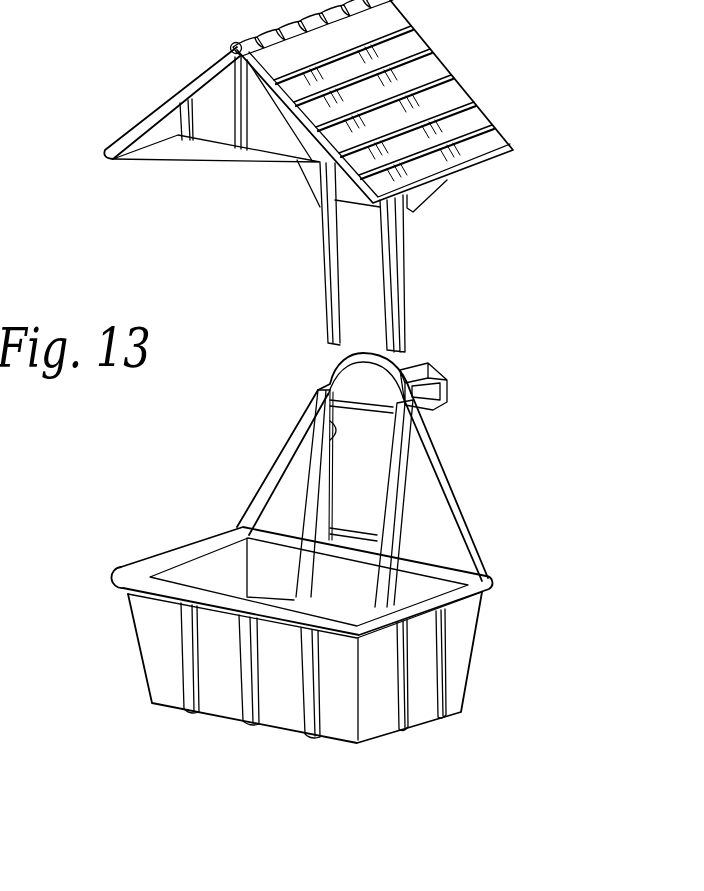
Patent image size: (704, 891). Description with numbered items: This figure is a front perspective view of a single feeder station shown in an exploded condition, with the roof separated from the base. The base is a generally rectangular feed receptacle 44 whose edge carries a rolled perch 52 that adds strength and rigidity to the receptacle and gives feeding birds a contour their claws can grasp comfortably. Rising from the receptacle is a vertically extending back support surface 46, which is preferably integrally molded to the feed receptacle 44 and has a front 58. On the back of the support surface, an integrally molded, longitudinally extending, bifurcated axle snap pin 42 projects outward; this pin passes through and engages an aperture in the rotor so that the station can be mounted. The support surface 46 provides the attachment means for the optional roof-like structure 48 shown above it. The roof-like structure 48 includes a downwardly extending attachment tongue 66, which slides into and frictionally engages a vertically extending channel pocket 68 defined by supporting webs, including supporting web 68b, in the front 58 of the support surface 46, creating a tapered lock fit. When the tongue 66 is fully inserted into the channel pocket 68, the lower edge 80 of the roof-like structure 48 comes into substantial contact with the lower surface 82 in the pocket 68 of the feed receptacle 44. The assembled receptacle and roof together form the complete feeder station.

The axle snap pin 42 is at (437, 362).
The feed receptacle 44 is at (477, 637).
The back support surface 46 is at (277, 513).
The roof-like structure 48 is at (463, 177).
The rolled perch 52 is at (200, 545).
The front 58 is at (433, 523).
The attachment tongue 66 is at (362, 283).
The channel pocket 68 is at (362, 450).
The supporting web 68b is at (330, 422).
The lower edge 80 is at (343, 347).
The lower surface 82 is at (345, 522).